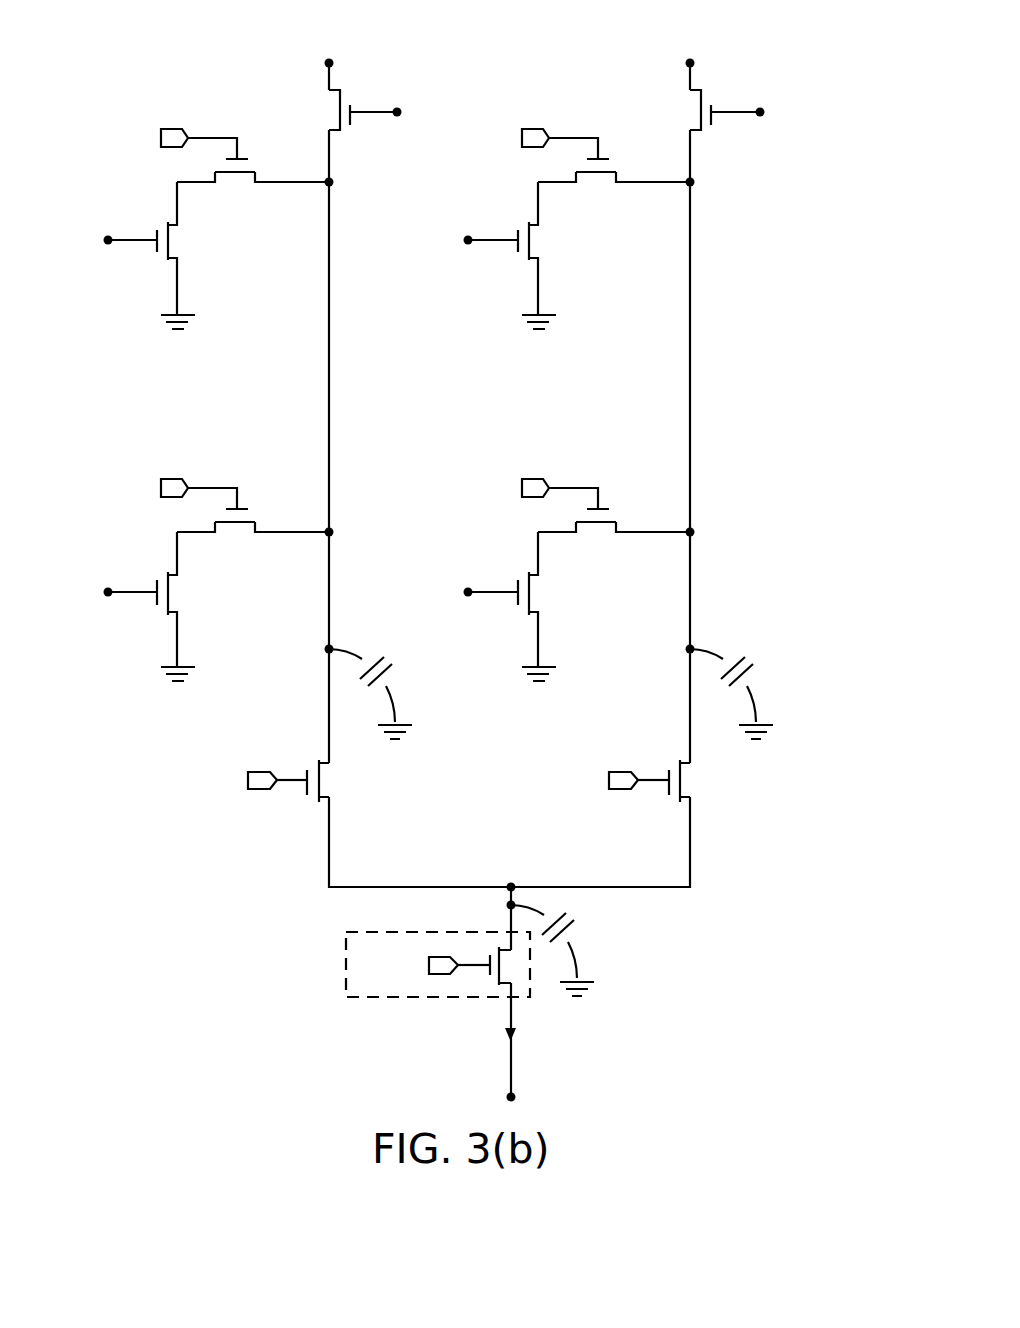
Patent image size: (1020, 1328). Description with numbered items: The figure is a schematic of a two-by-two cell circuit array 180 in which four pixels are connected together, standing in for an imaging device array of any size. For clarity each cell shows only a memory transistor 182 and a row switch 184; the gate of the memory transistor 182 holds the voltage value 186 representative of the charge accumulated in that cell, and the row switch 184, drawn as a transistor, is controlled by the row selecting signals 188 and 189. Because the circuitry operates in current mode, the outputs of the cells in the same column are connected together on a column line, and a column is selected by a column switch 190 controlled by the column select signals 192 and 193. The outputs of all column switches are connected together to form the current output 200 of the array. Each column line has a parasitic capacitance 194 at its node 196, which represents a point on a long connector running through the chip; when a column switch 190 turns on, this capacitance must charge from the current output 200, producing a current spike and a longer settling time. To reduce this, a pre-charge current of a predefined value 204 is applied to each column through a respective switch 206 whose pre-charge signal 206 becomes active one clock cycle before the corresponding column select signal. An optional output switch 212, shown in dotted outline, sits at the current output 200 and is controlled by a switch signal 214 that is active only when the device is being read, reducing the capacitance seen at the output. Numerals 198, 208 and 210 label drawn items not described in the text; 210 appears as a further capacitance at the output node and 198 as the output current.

The cell circuit array 180 is at (242, 991).
The memory transistor 182 is at (180, 241).
The row switch 184 is at (257, 164).
The voltage value 186 is at (112, 236).
The row selecting signal 188 is at (184, 128).
The row selecting signal 189 is at (176, 479).
The column switch 190 is at (307, 798).
The column select signal 192 is at (258, 768).
The column select signal 193 is at (627, 794).
The parasitic capacitance 194 is at (394, 672).
The node 196 is at (695, 535).
The output current Iout 198 is at (562, 1063).
The current output 200 is at (505, 1097).
The predefined value 204 is at (352, 93).
The pre-charge switch 206 is at (393, 126).
The precharge voltage Vpc node 208 is at (323, 61).
The output node capacitor 210 is at (578, 915).
The output switch 212 is at (493, 986).
The switch signal 214 is at (430, 978).